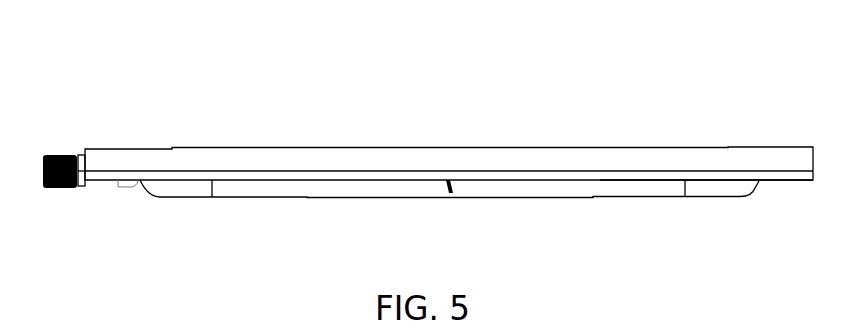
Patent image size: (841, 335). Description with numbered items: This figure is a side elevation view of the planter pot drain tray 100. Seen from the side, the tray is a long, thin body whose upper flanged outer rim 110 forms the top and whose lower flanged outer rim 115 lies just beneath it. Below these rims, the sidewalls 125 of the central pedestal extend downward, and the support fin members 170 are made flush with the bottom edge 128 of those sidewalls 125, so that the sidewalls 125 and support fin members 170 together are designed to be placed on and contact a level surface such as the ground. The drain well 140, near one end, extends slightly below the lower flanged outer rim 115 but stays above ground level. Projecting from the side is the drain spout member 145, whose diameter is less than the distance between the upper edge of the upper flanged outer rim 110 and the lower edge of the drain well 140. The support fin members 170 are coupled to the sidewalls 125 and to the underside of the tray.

The planter pot drain tray 100 is at (222, 92).
The upper flanged outer rim 110 is at (603, 157).
The lower flanged outer rim 115 is at (783, 176).
The sidewalls 125 is at (325, 186).
The bottom edge 128 is at (362, 208).
The drain well 140 is at (103, 185).
The drain spout member 145 is at (67, 155).
The support fin members 170 is at (175, 186).